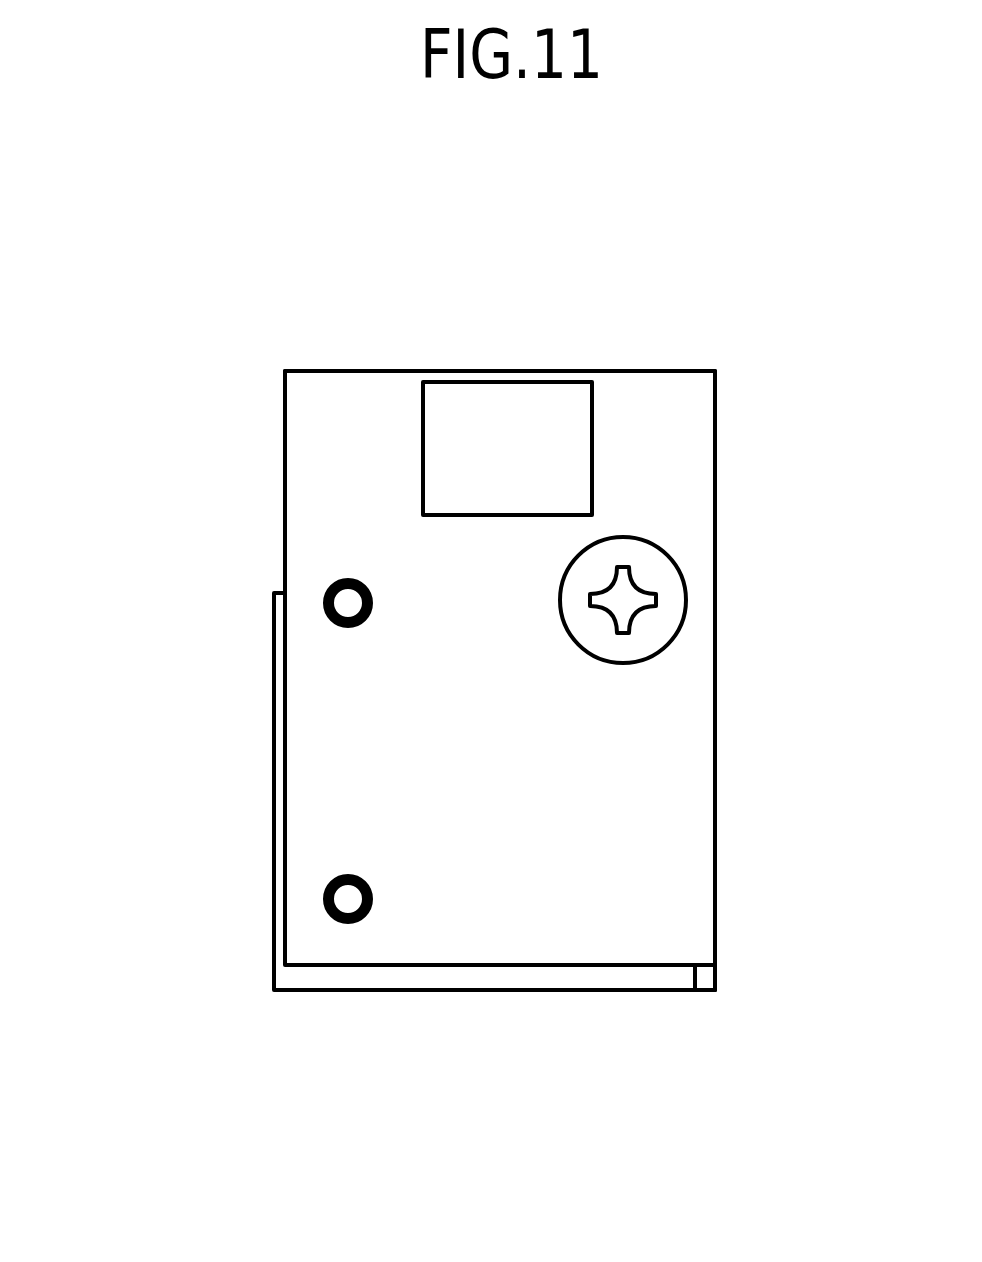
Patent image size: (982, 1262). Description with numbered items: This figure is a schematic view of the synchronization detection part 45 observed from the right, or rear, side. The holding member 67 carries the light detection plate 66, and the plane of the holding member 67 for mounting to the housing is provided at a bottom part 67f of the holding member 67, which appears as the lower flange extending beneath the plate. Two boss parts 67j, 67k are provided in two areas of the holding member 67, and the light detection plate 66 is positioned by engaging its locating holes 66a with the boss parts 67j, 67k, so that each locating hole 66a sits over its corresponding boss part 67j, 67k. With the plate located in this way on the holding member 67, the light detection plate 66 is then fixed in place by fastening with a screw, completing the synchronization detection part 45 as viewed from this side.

The holding unit 45 is at (733, 355).
The light detection plate 66 is at (670, 591).
The locating holes 66a is at (352, 603).
The holding member 67 is at (407, 972).
The bottom part 67f is at (550, 992).
The boss part 67j is at (342, 625).
The boss part 67k is at (340, 876).